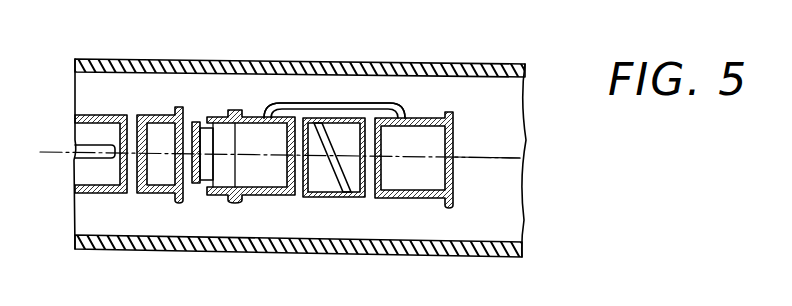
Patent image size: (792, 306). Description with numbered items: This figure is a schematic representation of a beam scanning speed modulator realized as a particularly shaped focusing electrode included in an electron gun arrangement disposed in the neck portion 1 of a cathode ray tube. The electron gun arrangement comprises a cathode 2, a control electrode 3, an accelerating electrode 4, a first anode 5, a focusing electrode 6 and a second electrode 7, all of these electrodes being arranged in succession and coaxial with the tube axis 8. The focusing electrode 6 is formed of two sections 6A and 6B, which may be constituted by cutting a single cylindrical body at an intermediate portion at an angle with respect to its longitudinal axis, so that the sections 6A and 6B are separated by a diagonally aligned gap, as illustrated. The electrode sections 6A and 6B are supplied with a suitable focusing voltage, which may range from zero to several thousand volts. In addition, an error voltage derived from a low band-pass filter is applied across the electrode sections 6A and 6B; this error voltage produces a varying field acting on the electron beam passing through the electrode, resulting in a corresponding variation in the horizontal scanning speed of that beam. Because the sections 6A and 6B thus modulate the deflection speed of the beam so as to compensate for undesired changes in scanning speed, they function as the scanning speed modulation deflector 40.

The tube (cylindrical housing) 1 is at (509, 63).
The cathode 2 is at (91, 148).
The control electrode 3 is at (110, 116).
The accelerating electrode 4 is at (155, 116).
The first anode 5 is at (246, 117).
The focusing electrode 6 is at (343, 117).
The scanning speed modulation deflector 40 is at (334, 110).
The electrode section 6A is at (318, 198).
The electrode section 6B is at (357, 198).
The second electrode 7 is at (430, 117).
The tube axis 8 is at (485, 160).